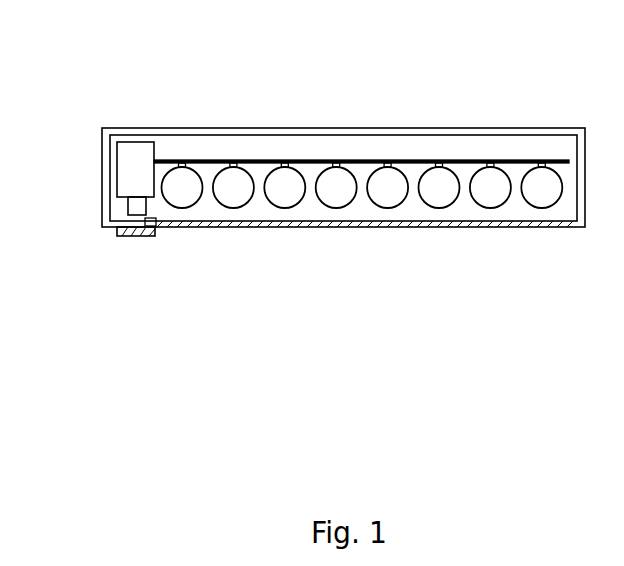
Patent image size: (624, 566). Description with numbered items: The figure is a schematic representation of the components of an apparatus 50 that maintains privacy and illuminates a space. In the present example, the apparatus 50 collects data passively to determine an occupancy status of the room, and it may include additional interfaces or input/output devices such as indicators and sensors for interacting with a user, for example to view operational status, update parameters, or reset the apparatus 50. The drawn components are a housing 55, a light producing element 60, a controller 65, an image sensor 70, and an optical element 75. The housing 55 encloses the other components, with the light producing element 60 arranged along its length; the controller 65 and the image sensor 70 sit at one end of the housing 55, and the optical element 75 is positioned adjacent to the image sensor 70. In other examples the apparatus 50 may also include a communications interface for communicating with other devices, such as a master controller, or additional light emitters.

The apparatus 50 is at (232, 370).
The housing 55 is at (383, 127).
The light producing element 60 is at (497, 144).
The controller 65 is at (149, 181).
The image sensor 70 is at (128, 205).
The optical element 75 is at (142, 236).